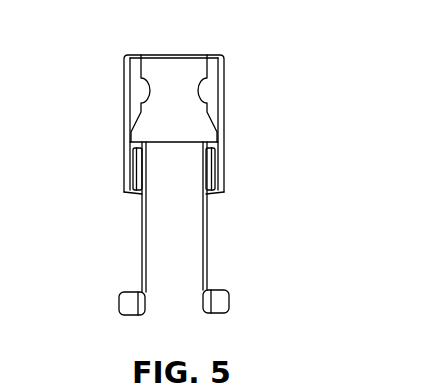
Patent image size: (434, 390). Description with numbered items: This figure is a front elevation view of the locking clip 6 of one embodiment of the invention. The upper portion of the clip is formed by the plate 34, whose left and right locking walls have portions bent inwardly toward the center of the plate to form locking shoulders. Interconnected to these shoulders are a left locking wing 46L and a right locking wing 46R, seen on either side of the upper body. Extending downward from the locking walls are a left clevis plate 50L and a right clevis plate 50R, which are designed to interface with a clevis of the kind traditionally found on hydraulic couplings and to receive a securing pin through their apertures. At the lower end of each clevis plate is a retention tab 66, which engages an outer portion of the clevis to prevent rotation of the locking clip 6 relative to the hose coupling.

The locking clip 6 is at (212, 177).
The plate 34 is at (175, 75).
The left locking wing 46L is at (134, 109).
The right locking wing 46R is at (213, 110).
The left clevis plate 50L is at (143, 243).
The right clevis plate 50R is at (208, 233).
The retention tab 66 is at (125, 312).